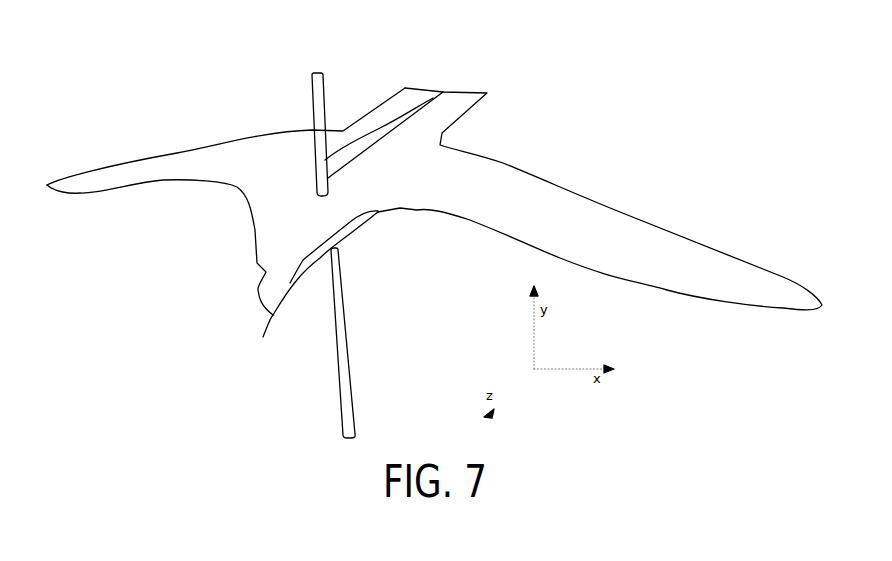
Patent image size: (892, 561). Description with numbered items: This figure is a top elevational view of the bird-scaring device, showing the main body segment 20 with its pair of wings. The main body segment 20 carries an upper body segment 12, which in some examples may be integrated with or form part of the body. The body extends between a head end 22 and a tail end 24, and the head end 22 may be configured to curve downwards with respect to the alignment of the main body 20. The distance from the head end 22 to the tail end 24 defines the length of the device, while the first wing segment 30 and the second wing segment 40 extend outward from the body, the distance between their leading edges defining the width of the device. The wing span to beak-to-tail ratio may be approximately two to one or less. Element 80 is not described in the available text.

The main body segment 20 is at (261, 112).
The upper body segment 12 is at (362, 140).
The head end 22 is at (263, 337).
The tail end 24 is at (410, 90).
The first wing segment 30 is at (187, 167).
The second wing segment 40 is at (507, 165).
The pin 80 is at (333, 378).